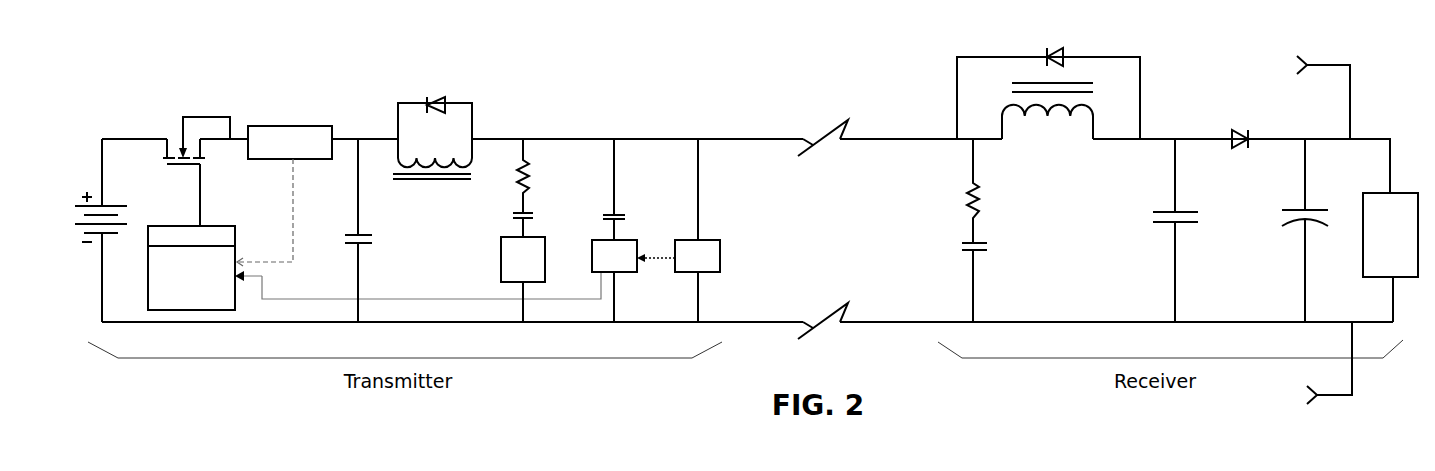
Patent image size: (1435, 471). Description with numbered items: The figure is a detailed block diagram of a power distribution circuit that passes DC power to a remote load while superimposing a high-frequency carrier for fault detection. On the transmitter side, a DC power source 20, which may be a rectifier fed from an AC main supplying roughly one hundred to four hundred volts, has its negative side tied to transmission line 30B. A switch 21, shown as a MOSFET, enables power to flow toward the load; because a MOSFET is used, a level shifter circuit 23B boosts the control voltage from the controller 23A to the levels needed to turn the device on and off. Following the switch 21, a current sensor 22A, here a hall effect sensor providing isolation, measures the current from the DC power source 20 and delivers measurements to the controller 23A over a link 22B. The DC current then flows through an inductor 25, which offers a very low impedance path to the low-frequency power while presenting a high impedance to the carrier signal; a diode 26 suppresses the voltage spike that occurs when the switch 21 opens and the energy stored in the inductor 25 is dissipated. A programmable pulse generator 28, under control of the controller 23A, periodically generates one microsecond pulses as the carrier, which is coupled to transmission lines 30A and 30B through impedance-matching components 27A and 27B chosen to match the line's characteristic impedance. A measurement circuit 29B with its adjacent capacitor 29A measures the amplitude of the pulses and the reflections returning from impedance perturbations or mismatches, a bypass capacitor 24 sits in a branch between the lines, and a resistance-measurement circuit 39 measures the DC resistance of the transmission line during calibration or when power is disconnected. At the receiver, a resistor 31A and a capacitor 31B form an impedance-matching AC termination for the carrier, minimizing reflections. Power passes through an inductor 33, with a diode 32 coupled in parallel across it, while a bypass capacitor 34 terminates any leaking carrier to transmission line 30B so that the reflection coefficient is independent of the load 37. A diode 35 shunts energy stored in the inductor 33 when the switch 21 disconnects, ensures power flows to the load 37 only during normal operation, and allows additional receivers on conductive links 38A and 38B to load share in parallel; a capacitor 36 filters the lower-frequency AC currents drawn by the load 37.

The DC power source 20 is at (71, 186).
The switch 21 is at (182, 134).
The current sensor 22A is at (299, 126).
The link 22B is at (201, 188).
The controller 23A is at (191, 278).
The level shifter circuit 23B is at (198, 226).
The bypass capacitor 24 is at (362, 245).
The inductor 25 is at (438, 183).
The diode 26 is at (442, 102).
The impedance-matching component 27A is at (531, 177).
The impedance-matching component 27B is at (516, 214).
The programmable pulse generator 28 is at (501, 262).
The capacitor 29A is at (620, 213).
The measurement circuit 29B is at (620, 273).
The resistance-measurement circuit 39 is at (712, 259).
The transmission line 30A is at (809, 150).
The transmission line 30B is at (831, 316).
The resistor 31A is at (969, 188).
The capacitor 31B is at (966, 252).
The diode 32 is at (1051, 47).
The inductor 33 is at (1052, 118).
The bypass capacitor 34 is at (1165, 211).
The diode 35 is at (1238, 131).
The capacitor 36 is at (1298, 222).
The load 37 is at (1375, 194).
The conductive link 38A is at (1352, 92).
The conductive link 38B is at (1353, 370).